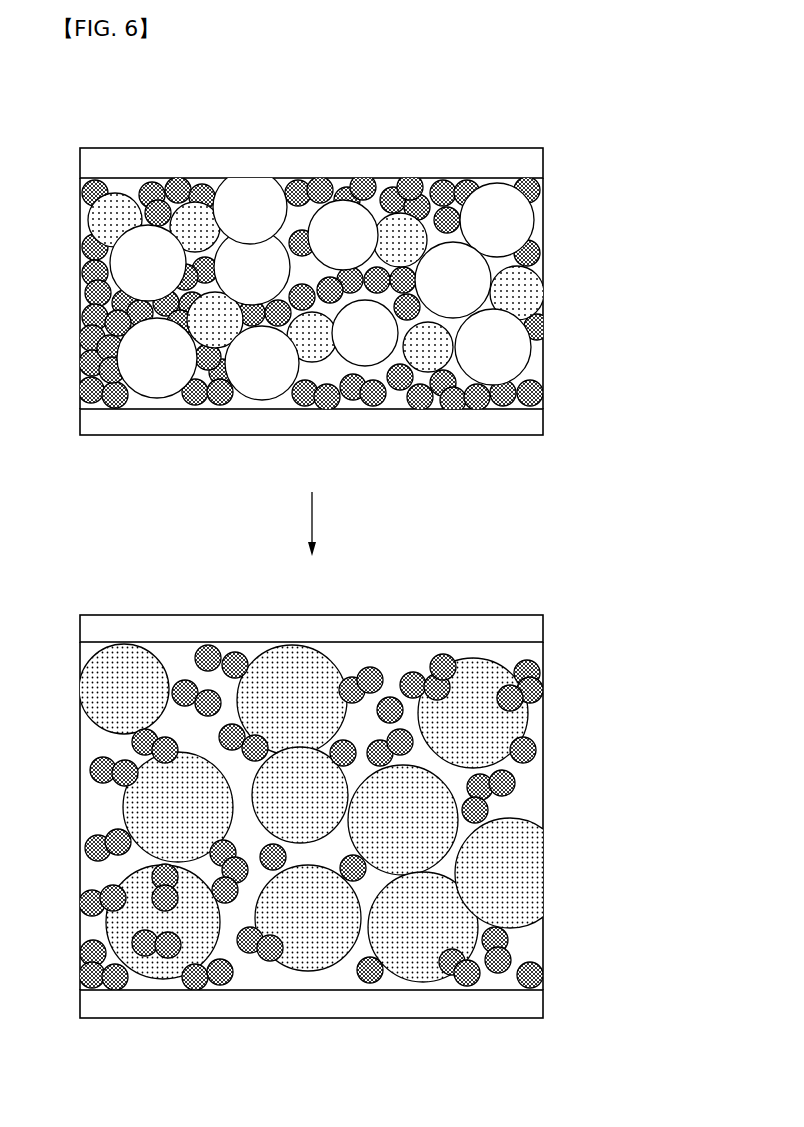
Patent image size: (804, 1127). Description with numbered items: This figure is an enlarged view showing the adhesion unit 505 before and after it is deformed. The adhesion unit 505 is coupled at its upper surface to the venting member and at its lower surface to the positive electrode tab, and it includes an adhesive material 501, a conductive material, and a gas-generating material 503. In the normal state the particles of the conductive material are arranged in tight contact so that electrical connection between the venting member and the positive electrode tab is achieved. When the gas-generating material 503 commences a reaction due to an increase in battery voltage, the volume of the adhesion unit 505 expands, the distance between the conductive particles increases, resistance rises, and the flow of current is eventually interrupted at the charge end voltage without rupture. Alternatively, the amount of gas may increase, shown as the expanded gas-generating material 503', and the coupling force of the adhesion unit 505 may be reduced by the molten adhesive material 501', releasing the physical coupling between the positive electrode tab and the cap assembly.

The adhesive material 501 is at (400, 285).
The gas-generating material 503 is at (389, 282).
The adhesion unit 505 is at (693, 221).
The molten adhesive material 501' is at (388, 813).
The gas-generating material in an expanded state 503' is at (388, 816).